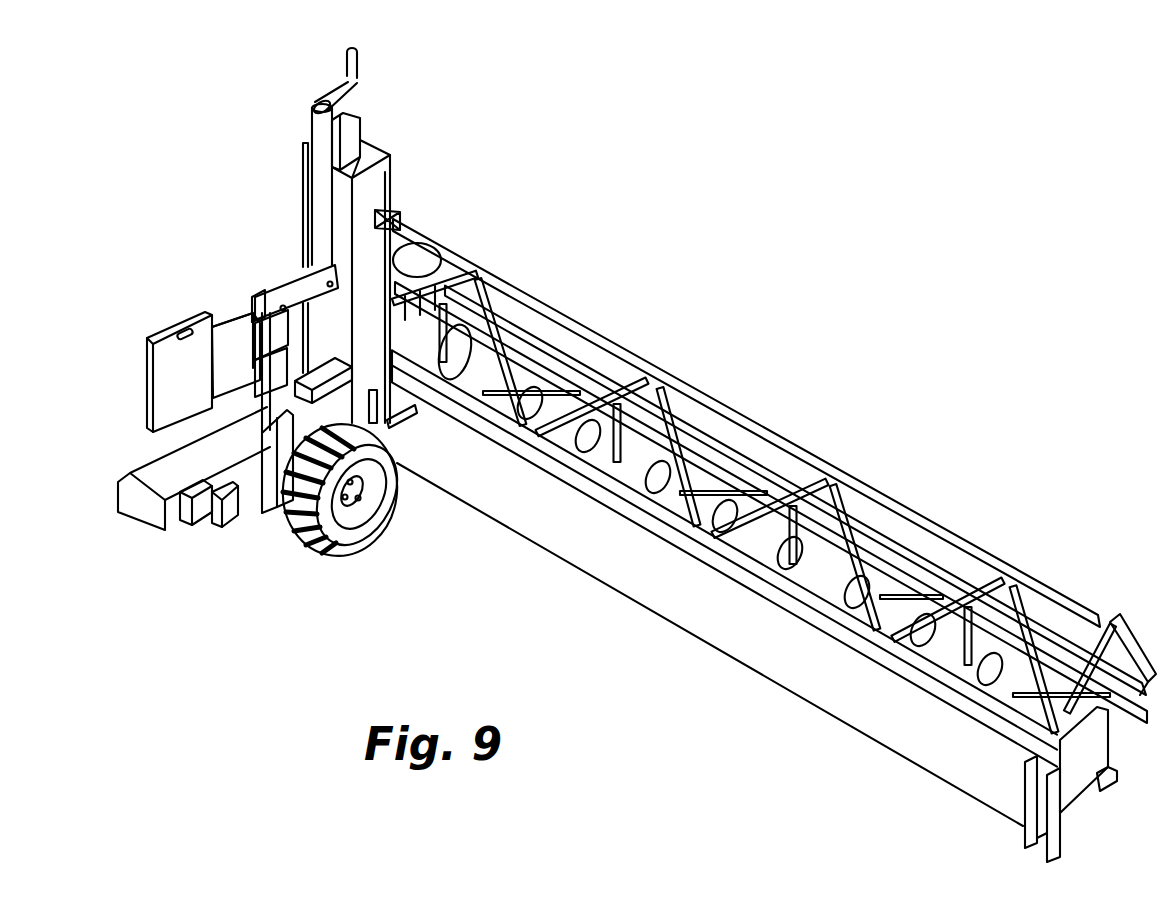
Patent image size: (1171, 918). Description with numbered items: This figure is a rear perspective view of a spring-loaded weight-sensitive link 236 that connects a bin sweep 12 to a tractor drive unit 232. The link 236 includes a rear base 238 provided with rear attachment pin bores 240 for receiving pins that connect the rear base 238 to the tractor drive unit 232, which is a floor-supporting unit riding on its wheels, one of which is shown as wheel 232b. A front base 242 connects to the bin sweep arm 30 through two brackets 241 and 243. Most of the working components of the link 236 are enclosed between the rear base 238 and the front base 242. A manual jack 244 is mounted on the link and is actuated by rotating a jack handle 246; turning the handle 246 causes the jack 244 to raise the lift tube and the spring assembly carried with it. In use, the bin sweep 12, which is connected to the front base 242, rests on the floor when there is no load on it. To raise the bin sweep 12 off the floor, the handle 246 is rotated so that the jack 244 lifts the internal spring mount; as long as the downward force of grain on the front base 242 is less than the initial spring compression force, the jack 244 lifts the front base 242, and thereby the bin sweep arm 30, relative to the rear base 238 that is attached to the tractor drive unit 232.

The bin sweep 12 is at (752, 380).
The bin sweep arm 30 is at (910, 515).
The tractor drive unit 232 is at (226, 552).
The wheel 232b is at (357, 533).
The spring-loaded weight-sensitive link 236 is at (396, 131).
The rear base 238 is at (340, 237).
The rear attachment pin bores 240 is at (257, 323).
The bracket 241 is at (450, 263).
The front base 242 is at (394, 228).
The bracket 243 is at (413, 396).
The manual jack 244 is at (317, 182).
The jack handle 246 is at (346, 64).